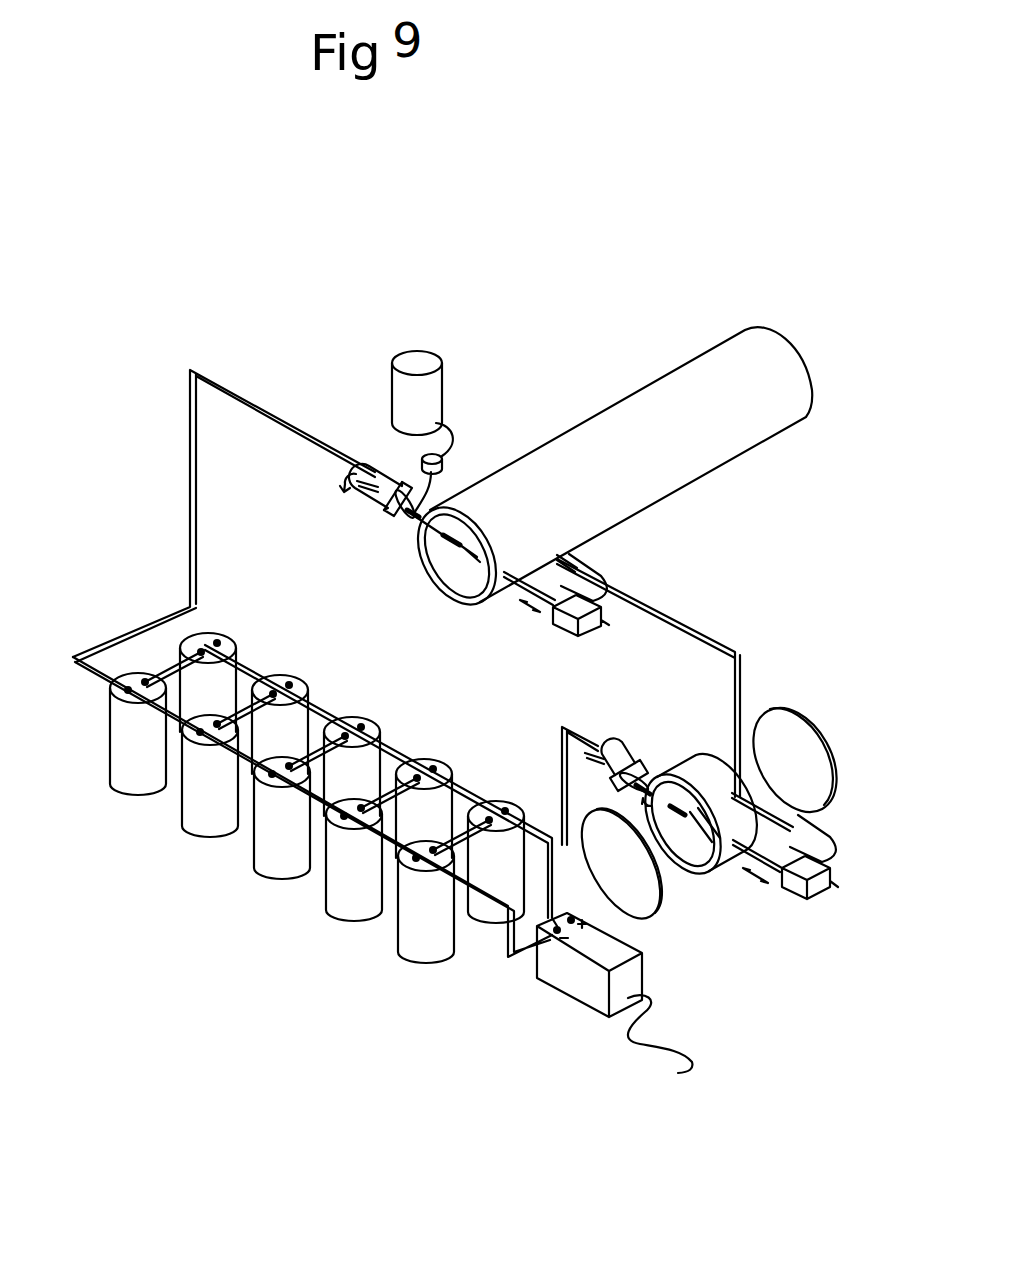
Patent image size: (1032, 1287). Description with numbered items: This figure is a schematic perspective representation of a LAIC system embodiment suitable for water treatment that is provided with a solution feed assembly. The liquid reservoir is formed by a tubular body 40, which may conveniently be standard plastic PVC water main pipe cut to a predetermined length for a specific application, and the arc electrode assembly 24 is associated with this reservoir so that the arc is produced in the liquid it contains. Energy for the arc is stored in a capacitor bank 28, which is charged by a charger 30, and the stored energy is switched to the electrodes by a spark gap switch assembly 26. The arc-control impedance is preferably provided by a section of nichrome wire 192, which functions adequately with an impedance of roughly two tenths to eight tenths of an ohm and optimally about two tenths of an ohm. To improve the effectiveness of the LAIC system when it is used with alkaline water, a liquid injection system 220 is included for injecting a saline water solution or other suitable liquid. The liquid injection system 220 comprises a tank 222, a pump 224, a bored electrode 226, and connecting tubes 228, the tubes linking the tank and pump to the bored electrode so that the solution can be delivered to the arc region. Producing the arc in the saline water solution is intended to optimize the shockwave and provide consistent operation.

The nichrome wire 192 is at (150, 345).
The arc electrode assembly 24 is at (627, 439).
The tubular body 40 is at (727, 428).
The liquid injection system 220 is at (387, 350).
The tank 222 is at (420, 360).
The pump 224 is at (415, 461).
The bored electrode 226 is at (456, 537).
The connecting tubes 228 is at (443, 452).
The spark gap switch assembly 26 is at (843, 692).
The capacitor bank 28 is at (261, 911).
The charger 30 is at (564, 1022).